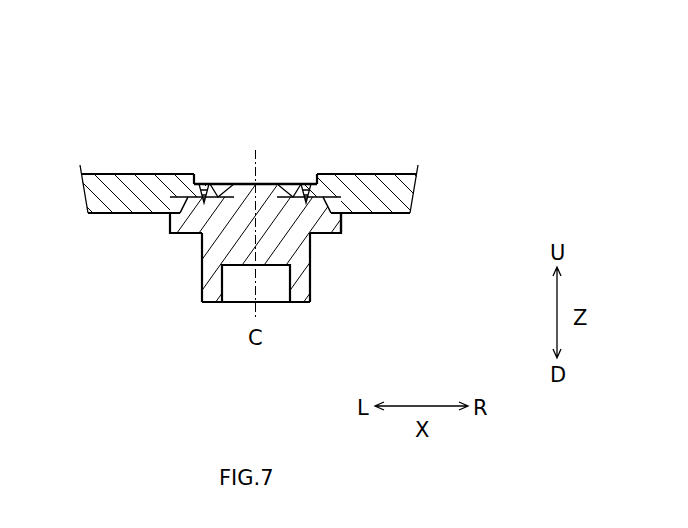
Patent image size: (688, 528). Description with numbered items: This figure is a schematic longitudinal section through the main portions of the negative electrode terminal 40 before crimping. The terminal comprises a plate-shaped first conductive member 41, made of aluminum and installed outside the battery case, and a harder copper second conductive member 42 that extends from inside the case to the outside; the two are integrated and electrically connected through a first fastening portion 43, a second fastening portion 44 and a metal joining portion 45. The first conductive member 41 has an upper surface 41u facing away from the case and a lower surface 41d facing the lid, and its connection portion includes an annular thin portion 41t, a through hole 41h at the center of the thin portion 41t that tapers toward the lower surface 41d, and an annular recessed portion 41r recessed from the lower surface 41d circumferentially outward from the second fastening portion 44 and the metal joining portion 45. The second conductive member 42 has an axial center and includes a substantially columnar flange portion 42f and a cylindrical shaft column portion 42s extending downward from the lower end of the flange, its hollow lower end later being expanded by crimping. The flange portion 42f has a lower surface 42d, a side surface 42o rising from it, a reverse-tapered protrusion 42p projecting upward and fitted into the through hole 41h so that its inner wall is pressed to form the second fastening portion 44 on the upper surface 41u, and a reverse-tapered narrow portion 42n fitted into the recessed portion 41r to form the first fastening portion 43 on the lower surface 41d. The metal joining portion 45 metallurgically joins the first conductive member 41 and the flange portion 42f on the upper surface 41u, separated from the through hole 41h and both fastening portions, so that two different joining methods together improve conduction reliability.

The negative electrode terminal 40 is at (342, 62).
The first conductive member 41 is at (383, 147).
The upper surface 41u is at (104, 173).
The lower surface 41d is at (102, 214).
The through hole 41h is at (279, 182).
The thin portion 41t is at (317, 173).
The recessed portion 41r is at (187, 202).
The first fastening portion 43 is at (155, 186).
The second fastening portion 44 is at (218, 174).
The metal joining portion 45 is at (199, 175).
The second conductive member 42 is at (393, 307).
The flange portion 42f is at (172, 226).
The narrow portion 42n is at (338, 206).
The side surface 42o is at (343, 222).
The lower surface 42d is at (312, 242).
The protrusion 42p is at (219, 303).
The shaft column portion 42s is at (293, 268).